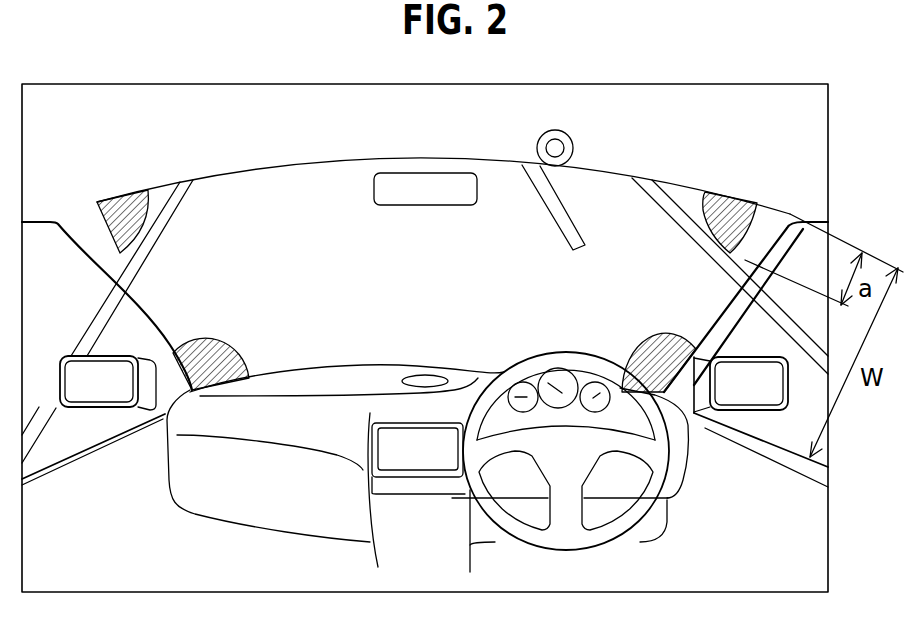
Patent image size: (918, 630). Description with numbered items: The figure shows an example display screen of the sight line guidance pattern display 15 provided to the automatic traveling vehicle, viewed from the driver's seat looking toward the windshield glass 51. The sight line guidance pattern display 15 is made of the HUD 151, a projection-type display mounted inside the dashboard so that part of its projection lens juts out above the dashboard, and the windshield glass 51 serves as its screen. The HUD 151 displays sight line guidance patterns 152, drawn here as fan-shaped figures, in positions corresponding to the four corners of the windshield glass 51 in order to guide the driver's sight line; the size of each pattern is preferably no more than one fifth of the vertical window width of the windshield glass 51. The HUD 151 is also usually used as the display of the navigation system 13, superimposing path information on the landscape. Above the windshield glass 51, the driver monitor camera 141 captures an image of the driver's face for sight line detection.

The windshield glass 51 is at (263, 166).
The driver monitor camera 141 is at (568, 135).
The sight line guidance pattern 152 is at (118, 197).
The head-up display (HUD) 151 is at (422, 375).
The sight line guidance pattern display 15 is at (435, 353).
The navigation system 13 is at (387, 440).